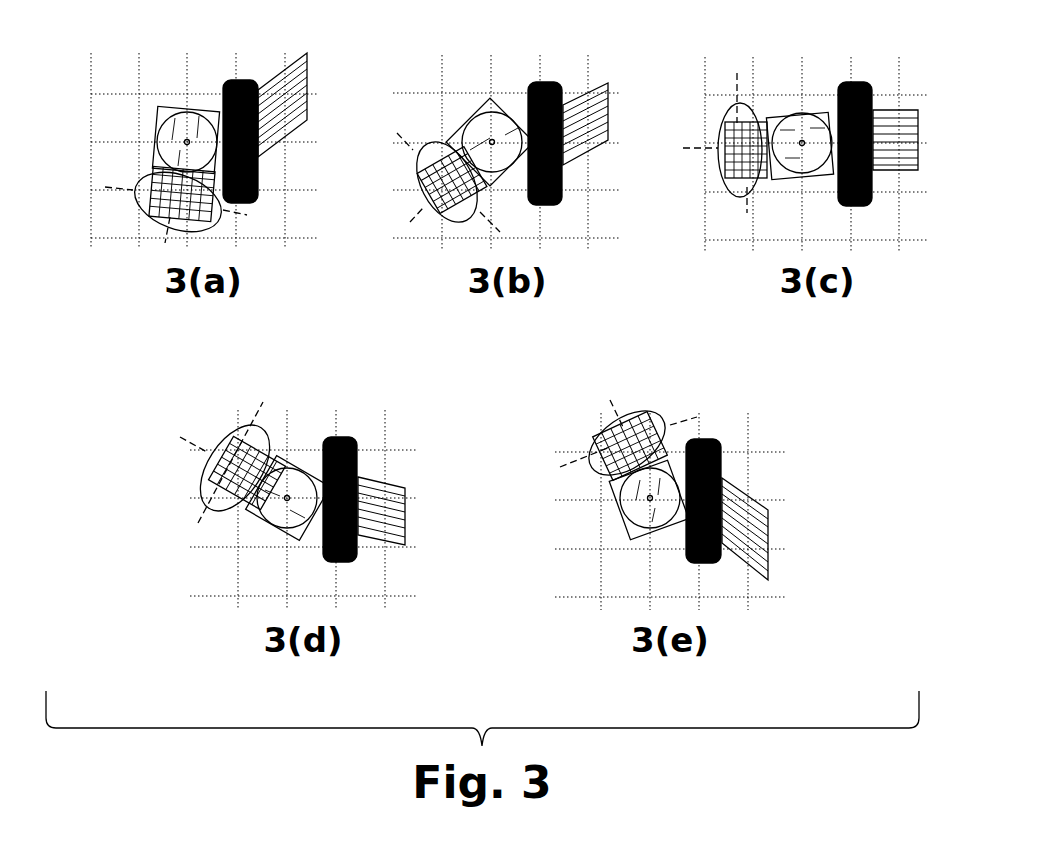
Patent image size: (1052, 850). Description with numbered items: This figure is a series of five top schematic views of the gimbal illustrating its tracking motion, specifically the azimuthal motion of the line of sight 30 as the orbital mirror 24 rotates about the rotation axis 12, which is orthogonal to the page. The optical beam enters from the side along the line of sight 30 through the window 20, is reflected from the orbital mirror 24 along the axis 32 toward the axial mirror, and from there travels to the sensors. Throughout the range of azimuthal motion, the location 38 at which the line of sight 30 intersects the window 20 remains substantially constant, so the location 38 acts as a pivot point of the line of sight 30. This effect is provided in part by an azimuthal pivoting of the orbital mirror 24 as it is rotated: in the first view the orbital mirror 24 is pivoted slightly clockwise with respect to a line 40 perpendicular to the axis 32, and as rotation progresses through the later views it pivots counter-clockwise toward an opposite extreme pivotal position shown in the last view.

The rotation axis 12 is at (187, 142).
The window 20 is at (230, 82).
The orbital mirror 24 is at (137, 190).
The line of sight 30 is at (272, 77).
The axis 32 is at (163, 252).
The location 38 is at (247, 140).
The line 40 is at (117, 190).